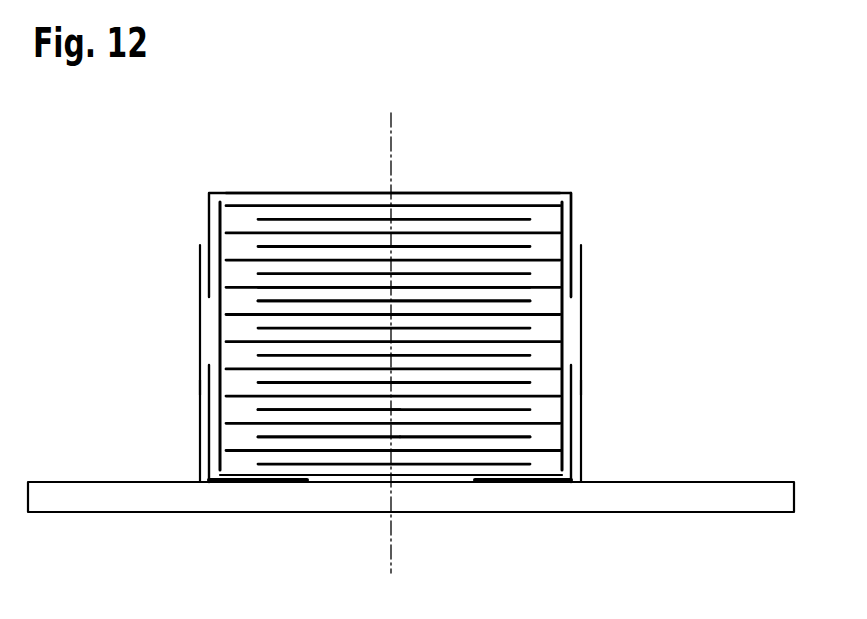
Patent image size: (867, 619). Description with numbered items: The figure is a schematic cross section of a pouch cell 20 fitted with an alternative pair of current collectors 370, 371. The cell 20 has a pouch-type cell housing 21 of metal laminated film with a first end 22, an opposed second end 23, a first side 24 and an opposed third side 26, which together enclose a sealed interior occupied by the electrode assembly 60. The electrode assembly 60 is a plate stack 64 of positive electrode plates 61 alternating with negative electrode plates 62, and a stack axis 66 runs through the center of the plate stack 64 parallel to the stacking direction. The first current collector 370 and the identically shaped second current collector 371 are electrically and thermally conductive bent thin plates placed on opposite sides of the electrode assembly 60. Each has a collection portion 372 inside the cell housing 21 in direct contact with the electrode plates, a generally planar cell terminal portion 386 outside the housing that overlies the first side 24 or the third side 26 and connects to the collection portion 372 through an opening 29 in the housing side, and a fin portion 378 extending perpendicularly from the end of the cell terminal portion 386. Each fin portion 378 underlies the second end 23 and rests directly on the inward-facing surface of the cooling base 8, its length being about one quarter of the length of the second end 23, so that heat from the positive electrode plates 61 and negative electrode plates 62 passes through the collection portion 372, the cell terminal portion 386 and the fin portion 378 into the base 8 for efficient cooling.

The cooling base 8 is at (728, 500).
The cell 20 is at (393, 288).
The cell housing 21 is at (310, 192).
The first end 22 is at (243, 192).
The second end 23 is at (362, 484).
The first side 24 is at (209, 222).
The third side 26 is at (571, 222).
The opening 29 is at (209, 365).
The electrode assembly 60 is at (434, 153).
The positive electrode plates 61 is at (232, 410).
The negative electrode plates 62 is at (548, 437).
The plate stack 64 is at (530, 194).
The stack axis 66 is at (394, 152).
The first current collector 370 is at (197, 196).
The second current collector 371 is at (577, 198).
The collection portion 372 is at (228, 300).
The fin portion 378 is at (270, 484).
The cell terminal portion 386 is at (200, 388).